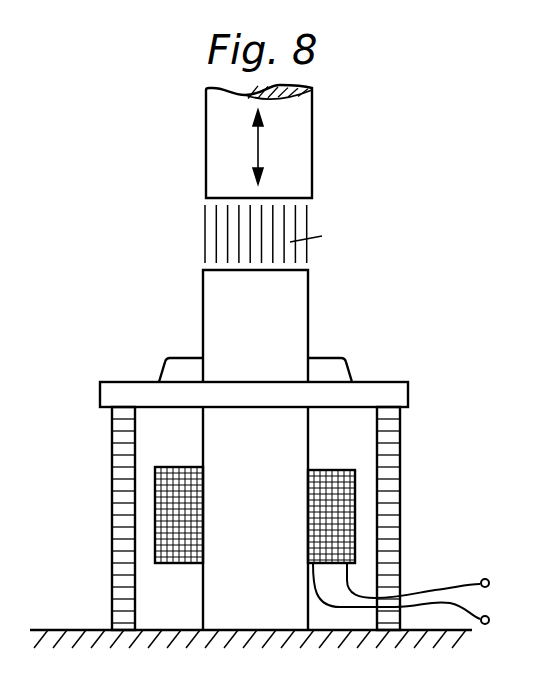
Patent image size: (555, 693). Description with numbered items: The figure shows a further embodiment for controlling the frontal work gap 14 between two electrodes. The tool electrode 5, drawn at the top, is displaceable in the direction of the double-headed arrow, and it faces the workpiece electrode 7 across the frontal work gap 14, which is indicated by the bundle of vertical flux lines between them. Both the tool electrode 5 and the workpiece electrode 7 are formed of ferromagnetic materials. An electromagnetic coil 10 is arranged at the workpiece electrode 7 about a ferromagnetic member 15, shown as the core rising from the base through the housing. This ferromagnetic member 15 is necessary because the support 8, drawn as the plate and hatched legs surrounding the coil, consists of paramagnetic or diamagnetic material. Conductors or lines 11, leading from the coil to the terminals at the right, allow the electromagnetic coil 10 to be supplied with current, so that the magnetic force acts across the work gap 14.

The tool electrode 5 is at (214, 131).
The workpiece electrode 7 is at (297, 318).
The support 8 is at (123, 473).
The electromagnetic coil 10 is at (343, 485).
The conductors or lines 11 is at (490, 586).
The frontal work gap 14 is at (200, 205).
The ferromagnetic member 15 is at (242, 615).